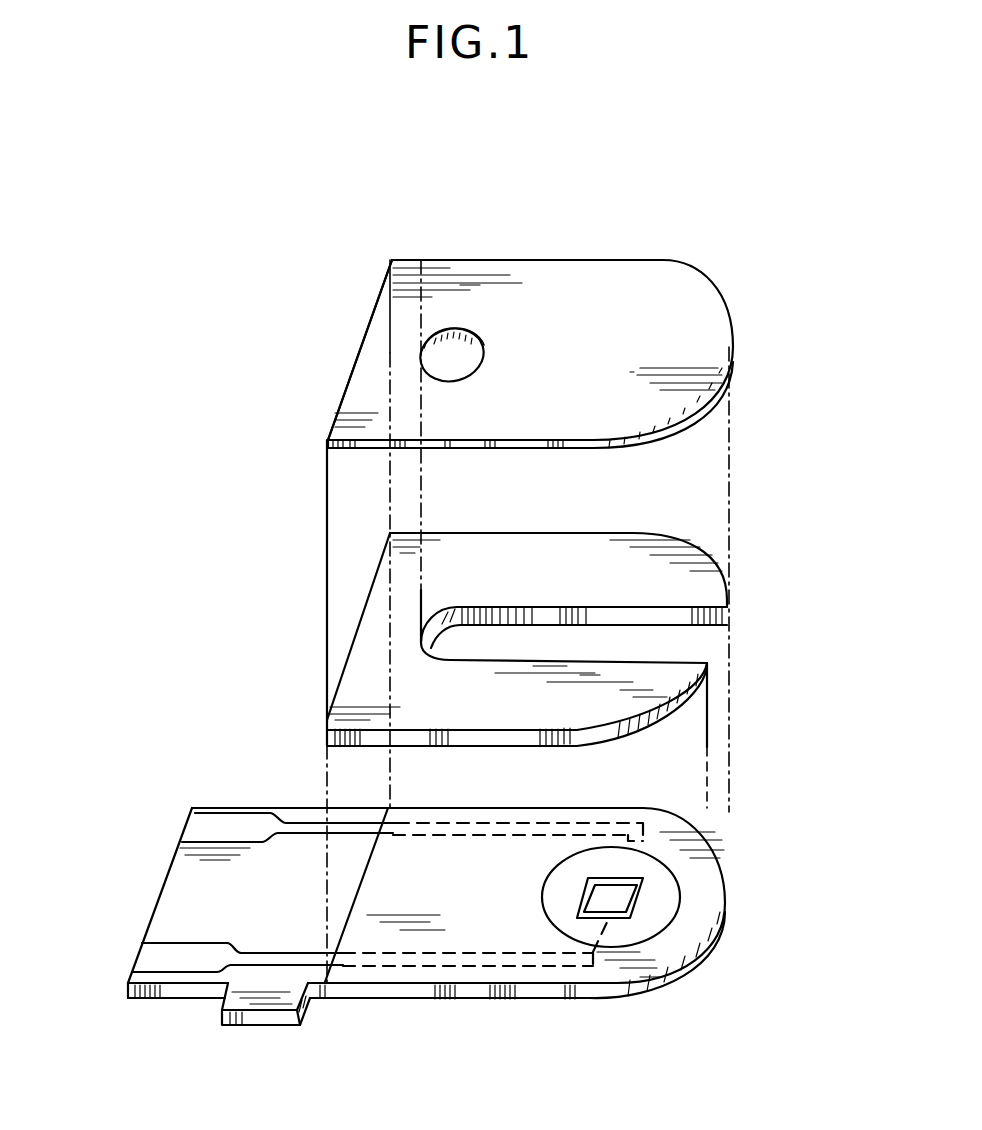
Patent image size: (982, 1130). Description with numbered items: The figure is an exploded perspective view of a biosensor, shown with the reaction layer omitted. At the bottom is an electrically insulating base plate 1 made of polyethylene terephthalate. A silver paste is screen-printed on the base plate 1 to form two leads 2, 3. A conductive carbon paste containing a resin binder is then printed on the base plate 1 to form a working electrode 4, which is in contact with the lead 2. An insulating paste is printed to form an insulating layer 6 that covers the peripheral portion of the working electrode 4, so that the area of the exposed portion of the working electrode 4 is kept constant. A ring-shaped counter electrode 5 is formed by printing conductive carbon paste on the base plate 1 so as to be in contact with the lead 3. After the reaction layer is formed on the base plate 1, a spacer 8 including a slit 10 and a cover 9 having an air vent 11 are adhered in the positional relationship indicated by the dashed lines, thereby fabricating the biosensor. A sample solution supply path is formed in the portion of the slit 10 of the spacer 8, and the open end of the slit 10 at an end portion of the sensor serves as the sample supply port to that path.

The base plate 1 is at (252, 900).
The lead 2 is at (157, 962).
The lead 3 is at (205, 830).
The working electrode 4 is at (608, 897).
The counter electrode 5 is at (628, 858).
The insulating layer 6 is at (465, 928).
The spacer 8 is at (380, 640).
The cover 9 is at (375, 370).
The slit 10 is at (693, 642).
The air vent 11 is at (452, 352).